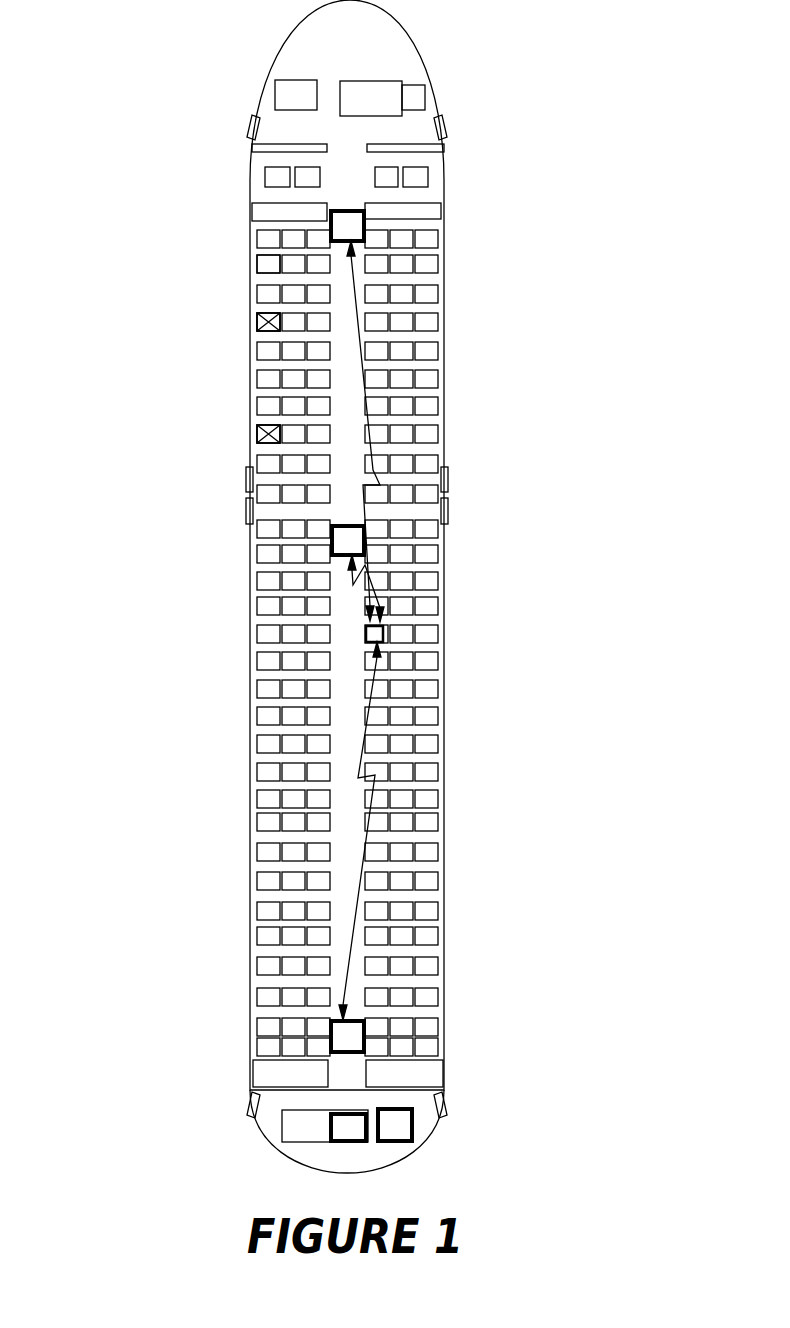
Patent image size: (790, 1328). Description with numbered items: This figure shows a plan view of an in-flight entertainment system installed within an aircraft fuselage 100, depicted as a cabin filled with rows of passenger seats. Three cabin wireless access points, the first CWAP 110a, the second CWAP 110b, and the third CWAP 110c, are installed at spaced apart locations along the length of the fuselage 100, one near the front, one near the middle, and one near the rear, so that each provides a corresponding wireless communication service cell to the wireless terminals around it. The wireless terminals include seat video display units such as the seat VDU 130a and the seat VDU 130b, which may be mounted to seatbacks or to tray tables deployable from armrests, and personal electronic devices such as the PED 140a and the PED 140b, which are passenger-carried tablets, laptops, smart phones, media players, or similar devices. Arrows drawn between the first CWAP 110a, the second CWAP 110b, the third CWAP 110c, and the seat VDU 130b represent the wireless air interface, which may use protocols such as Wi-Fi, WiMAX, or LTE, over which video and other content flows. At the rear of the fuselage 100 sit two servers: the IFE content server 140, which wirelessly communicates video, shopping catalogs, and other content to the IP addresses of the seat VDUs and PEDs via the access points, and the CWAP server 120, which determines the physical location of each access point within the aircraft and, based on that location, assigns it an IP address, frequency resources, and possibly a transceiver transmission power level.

The aircraft fuselage 100 is at (281, 52).
The CWAP_1 110a is at (365, 223).
The CWAP_2 110b is at (332, 525).
The CWAP_3 110c is at (340, 1020).
The seat VDU 130a is at (262, 262).
The seat VDU 130b is at (383, 633).
The PED 140a is at (260, 318).
The PED 140b is at (260, 430).
The CWAP server 120 is at (357, 1142).
The IFE content server 140 is at (415, 1125).